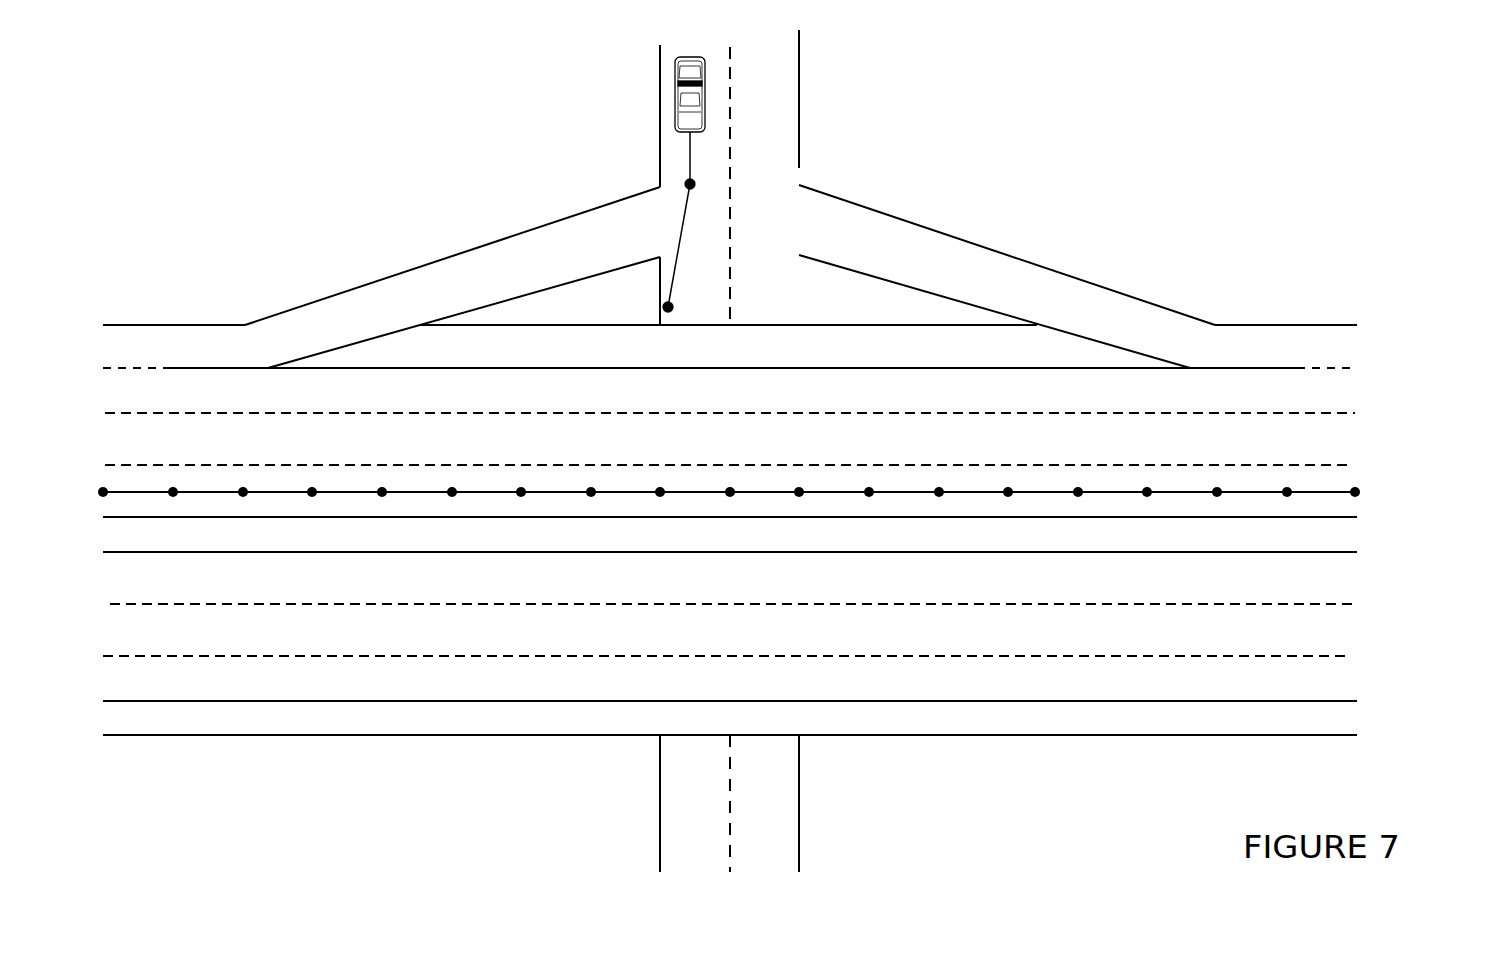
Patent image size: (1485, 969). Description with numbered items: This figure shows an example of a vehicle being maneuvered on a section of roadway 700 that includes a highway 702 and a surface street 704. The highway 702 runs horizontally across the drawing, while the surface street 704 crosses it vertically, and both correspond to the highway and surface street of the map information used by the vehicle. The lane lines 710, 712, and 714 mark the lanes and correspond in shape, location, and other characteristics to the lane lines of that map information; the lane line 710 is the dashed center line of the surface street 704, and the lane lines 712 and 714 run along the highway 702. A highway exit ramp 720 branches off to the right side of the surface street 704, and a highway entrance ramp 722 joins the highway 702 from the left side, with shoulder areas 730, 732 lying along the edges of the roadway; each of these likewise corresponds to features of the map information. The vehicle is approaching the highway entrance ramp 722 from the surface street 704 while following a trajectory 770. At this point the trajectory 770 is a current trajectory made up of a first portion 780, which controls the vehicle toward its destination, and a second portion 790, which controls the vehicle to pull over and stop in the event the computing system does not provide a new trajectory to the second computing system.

The section of roadway 700 is at (1302, 797).
The highway 702 is at (485, 449).
The surface street 704 is at (746, 160).
The lane line 710 is at (730, 70).
The lane line 712 is at (1355, 413).
The lane line 714 is at (1357, 701).
The highway exit ramp 720 is at (970, 254).
The highway entrance ramp 722 is at (520, 246).
The shoulder area 730 is at (903, 344).
The shoulder area 732 is at (317, 726).
The trajectory 770 is at (685, 179).
The first portion 780 is at (688, 162).
The second portion 790 is at (683, 248).